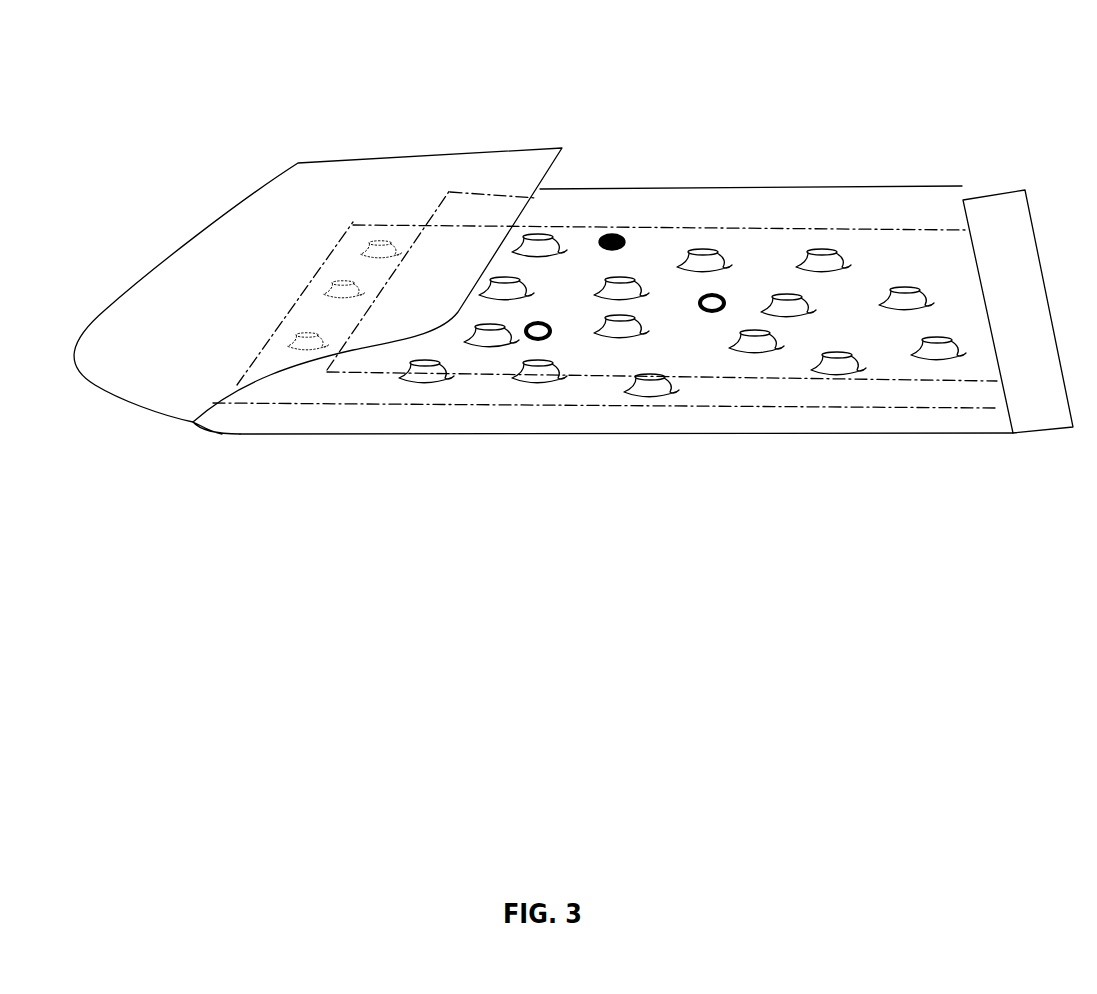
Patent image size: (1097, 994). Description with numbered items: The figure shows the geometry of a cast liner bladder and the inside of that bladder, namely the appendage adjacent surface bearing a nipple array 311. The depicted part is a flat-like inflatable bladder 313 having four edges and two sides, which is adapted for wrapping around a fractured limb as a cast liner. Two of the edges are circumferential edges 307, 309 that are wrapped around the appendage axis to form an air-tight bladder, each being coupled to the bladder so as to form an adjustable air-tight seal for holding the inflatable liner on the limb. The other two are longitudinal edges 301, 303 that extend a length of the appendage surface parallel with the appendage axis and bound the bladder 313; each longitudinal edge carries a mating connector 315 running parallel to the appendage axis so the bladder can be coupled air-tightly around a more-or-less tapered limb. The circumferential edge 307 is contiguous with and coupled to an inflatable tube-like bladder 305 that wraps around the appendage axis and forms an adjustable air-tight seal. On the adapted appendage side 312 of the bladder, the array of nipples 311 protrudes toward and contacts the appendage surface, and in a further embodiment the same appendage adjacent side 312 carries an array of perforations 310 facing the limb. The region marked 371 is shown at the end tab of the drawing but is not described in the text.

The longitudinal edge 301 is at (498, 255).
The longitudinal edge 303 is at (1027, 207).
The inflatable tube-like bladder 305 is at (780, 211).
The circumferential edge 307 is at (837, 197).
The circumferential edge 309 is at (612, 437).
The array of perforations 310 is at (535, 338).
The nipple array 311 is at (937, 343).
The adapted appendage side 312 is at (700, 348).
The inflatable bladder 313 is at (352, 504).
The mating connector 315 is at (425, 317).
The tab region 371 is at (1034, 374).